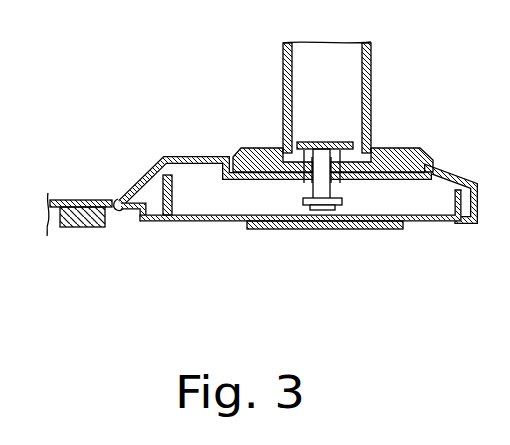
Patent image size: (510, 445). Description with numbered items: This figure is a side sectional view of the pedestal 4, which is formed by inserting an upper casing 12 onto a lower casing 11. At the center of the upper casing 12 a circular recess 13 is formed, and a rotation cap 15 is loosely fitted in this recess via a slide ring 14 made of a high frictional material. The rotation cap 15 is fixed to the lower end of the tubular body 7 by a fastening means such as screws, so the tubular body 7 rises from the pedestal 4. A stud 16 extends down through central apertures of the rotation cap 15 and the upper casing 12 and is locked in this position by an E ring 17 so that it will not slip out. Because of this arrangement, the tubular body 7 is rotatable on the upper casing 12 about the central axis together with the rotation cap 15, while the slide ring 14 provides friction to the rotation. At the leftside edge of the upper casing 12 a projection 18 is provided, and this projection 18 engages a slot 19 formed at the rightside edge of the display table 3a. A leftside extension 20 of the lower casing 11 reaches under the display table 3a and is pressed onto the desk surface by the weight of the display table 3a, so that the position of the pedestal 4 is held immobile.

The display table 3a is at (68, 200).
The pedestal 4 is at (257, 167).
The tubular body 7 is at (370, 56).
The lower casing 11 is at (212, 222).
The upper casing 12 is at (457, 164).
The circular recess 13 is at (367, 230).
The slide ring 14 is at (242, 153).
The rotation cap 15 is at (270, 147).
The stud 16 is at (335, 146).
The E ring 17 is at (316, 230).
The projection 18 is at (116, 221).
The slot 19 is at (115, 199).
The leftside extension 20 is at (148, 222).